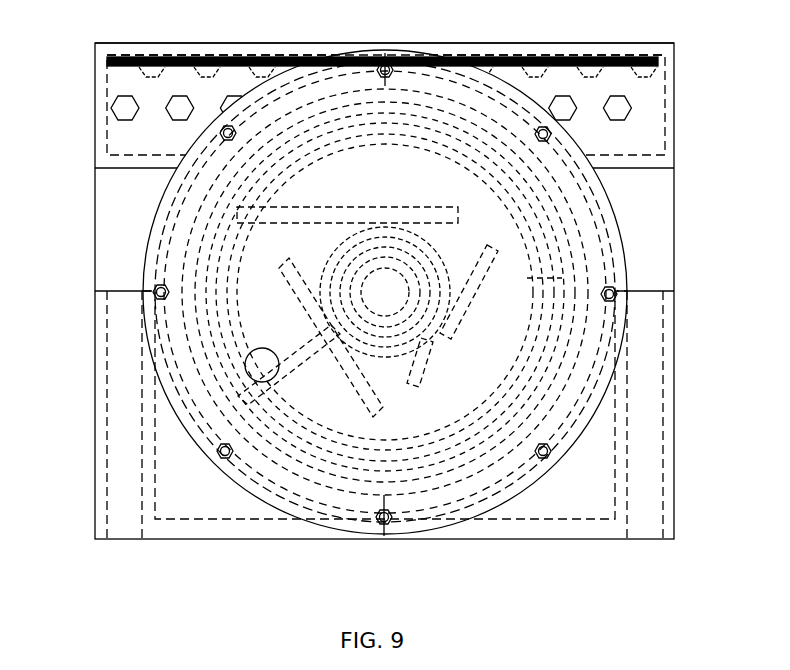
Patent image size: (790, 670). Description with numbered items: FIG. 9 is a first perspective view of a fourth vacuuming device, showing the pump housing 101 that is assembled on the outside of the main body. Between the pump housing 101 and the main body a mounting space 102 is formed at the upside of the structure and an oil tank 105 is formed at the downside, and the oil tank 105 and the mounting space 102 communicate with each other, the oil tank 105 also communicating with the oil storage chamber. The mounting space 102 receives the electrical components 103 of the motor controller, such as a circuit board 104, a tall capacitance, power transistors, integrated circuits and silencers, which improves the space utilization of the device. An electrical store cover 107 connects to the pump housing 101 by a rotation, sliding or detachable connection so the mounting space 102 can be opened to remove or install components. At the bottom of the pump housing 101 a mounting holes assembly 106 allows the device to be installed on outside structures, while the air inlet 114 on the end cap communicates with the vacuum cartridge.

The pump housing 101 is at (508, 530).
The mounting space 102 is at (126, 105).
The electrical components 103 is at (623, 107).
The circuit board 104 is at (645, 57).
The oil tank 105 is at (202, 495).
The mounting holes assembly 106 is at (643, 528).
The electrical store cover 107 is at (278, 48).
The air inlet 114 is at (249, 362).